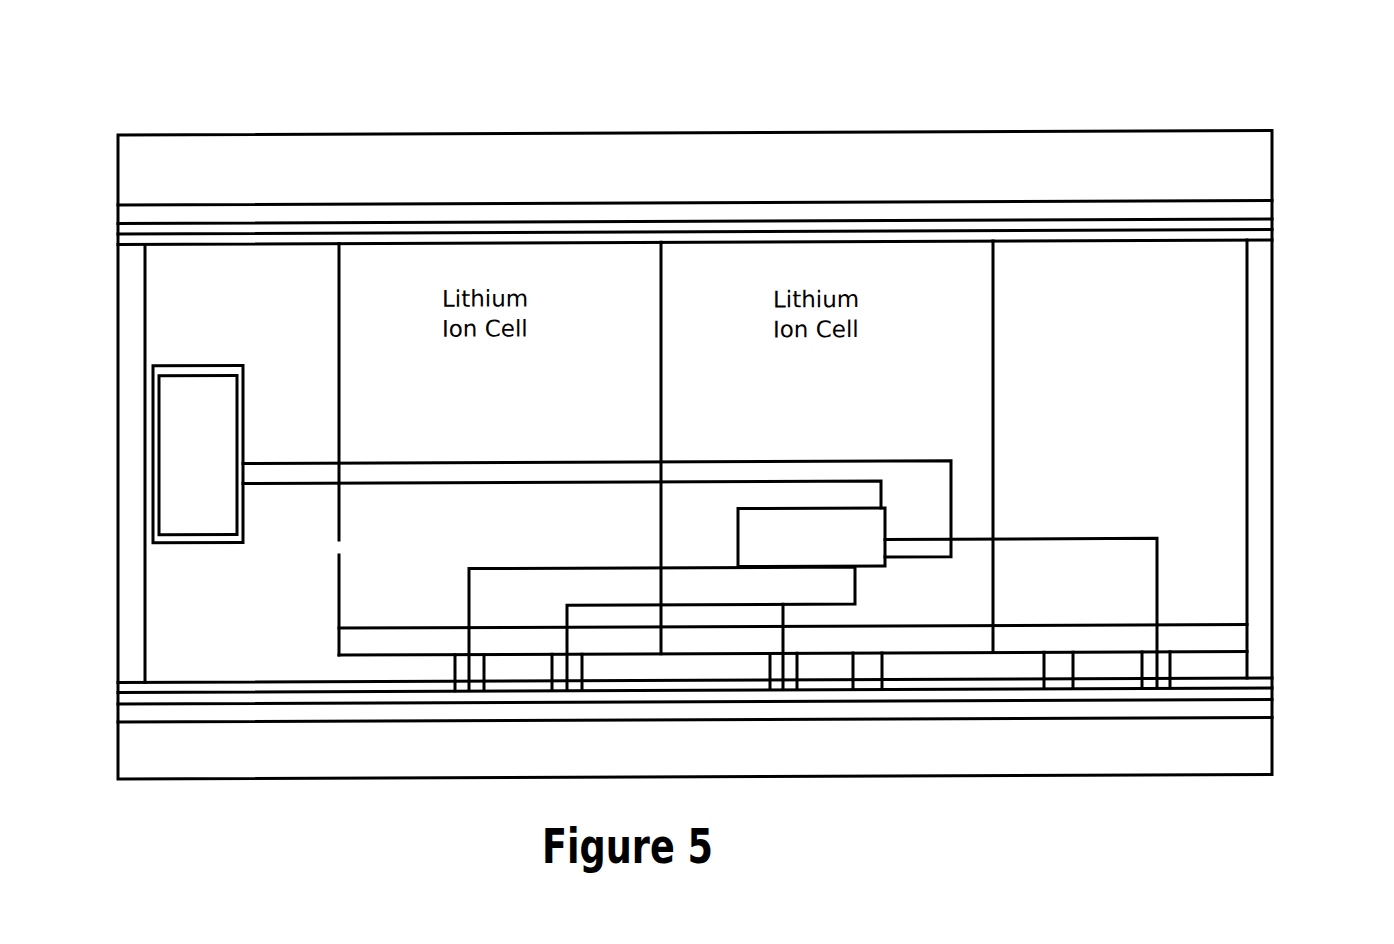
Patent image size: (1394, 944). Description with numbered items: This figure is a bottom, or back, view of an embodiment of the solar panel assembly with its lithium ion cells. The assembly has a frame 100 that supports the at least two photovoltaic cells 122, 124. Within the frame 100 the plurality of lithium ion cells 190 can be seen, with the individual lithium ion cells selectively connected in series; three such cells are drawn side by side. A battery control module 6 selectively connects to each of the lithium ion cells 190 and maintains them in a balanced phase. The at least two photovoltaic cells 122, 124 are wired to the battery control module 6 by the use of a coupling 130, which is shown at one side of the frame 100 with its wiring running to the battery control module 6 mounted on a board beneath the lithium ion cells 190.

The frame 100 is at (223, 135).
The photovoltaic cell 122 is at (518, 243).
The photovoltaic cell 124 is at (793, 243).
The coupling 130 is at (185, 425).
The lithium ion cells 190 is at (1199, 367).
The battery control module 6 is at (877, 570).